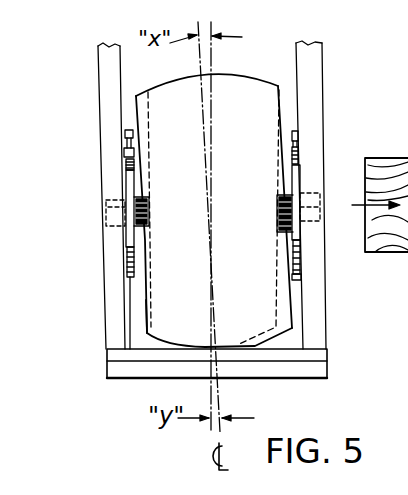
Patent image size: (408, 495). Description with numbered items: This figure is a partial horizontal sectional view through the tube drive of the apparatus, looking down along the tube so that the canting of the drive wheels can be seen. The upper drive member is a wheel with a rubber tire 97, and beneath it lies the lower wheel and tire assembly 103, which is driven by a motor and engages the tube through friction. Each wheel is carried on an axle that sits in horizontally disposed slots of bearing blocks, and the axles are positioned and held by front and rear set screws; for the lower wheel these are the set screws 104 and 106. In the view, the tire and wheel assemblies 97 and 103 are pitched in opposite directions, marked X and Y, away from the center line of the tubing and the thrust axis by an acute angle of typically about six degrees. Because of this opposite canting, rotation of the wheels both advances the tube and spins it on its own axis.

The upper wheel with rubber tire 97 is at (137, 97).
The lower wheel with rubber tire 103 is at (150, 303).
The front set screw 104 is at (125, 131).
The rear set screw 106 is at (300, 278).